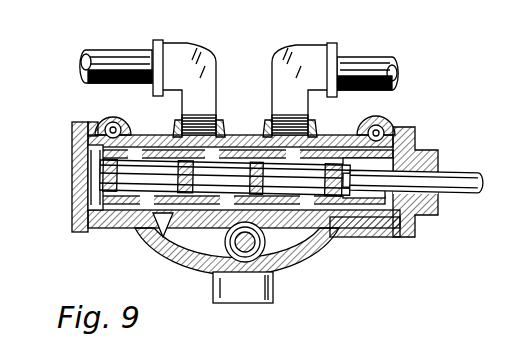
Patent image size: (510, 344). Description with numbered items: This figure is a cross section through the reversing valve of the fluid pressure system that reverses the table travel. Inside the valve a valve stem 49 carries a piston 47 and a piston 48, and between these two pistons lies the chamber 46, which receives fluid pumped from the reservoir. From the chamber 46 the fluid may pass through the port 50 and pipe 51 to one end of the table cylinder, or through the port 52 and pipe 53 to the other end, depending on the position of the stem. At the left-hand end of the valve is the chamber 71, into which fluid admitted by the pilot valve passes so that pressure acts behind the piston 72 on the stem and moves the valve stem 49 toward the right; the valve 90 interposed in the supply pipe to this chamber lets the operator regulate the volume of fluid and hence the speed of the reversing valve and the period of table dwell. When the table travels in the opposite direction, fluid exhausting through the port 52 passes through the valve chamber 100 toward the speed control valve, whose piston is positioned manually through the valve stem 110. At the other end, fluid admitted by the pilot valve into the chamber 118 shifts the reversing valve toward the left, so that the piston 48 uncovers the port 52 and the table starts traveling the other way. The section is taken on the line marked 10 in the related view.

The pipe 51 is at (110, 60).
The pipe 53 is at (368, 63).
The port 50 is at (173, 135).
The port 52 is at (335, 128).
The valve 90 is at (383, 126).
The valve chamber 100 is at (282, 168).
The chamber 46 is at (255, 165).
The chamber 71 is at (98, 158).
The valve stem 49 is at (459, 178).
The piston 72 is at (107, 232).
The piston 47 is at (173, 208).
The valve stem 110 is at (236, 250).
The piston 48 is at (282, 233).
The chamber 118 is at (363, 215).
The section line 10 is at (113, 230).